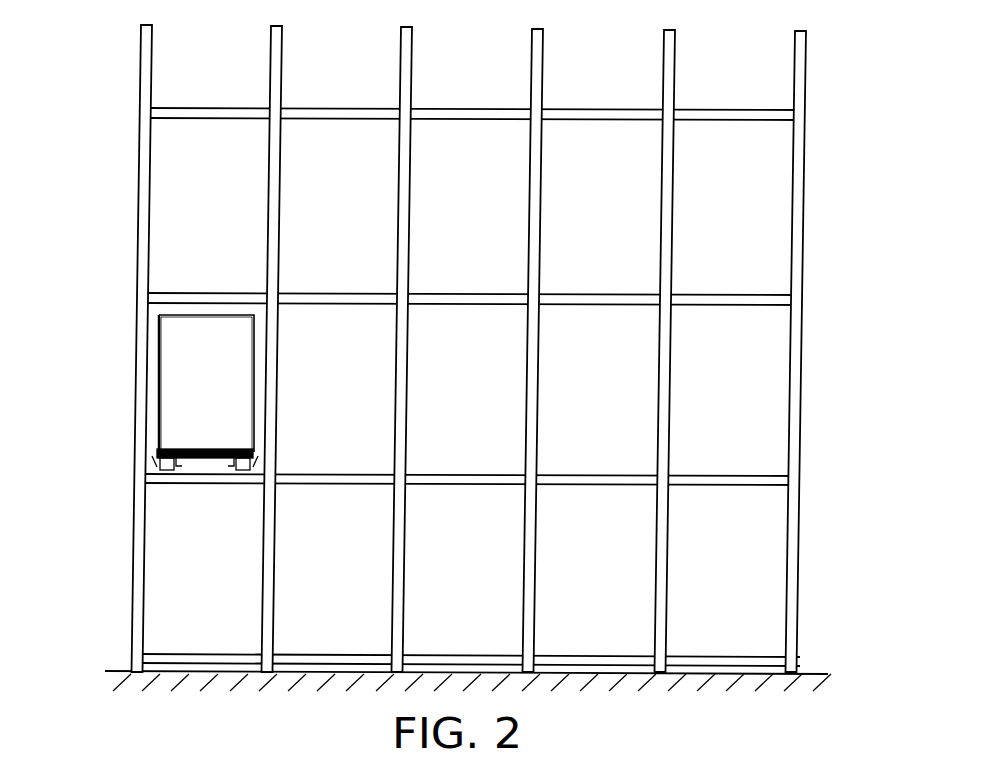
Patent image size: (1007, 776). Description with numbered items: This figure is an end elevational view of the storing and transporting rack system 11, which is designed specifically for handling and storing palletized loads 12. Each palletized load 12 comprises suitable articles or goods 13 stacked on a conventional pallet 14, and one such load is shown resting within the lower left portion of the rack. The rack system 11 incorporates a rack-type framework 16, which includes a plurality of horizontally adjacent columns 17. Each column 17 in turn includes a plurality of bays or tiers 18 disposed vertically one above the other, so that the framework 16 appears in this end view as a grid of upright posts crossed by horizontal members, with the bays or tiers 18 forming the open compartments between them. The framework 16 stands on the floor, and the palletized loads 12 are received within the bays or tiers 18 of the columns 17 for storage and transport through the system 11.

The storing and transporting rack system 11 is at (455, 348).
The palletized load 12 is at (157, 412).
The articles or goods 13 is at (173, 350).
The pallet 14 is at (223, 447).
The rack-type framework 16 is at (138, 203).
The column 17 is at (743, 668).
The bay or tier 18 is at (780, 68).